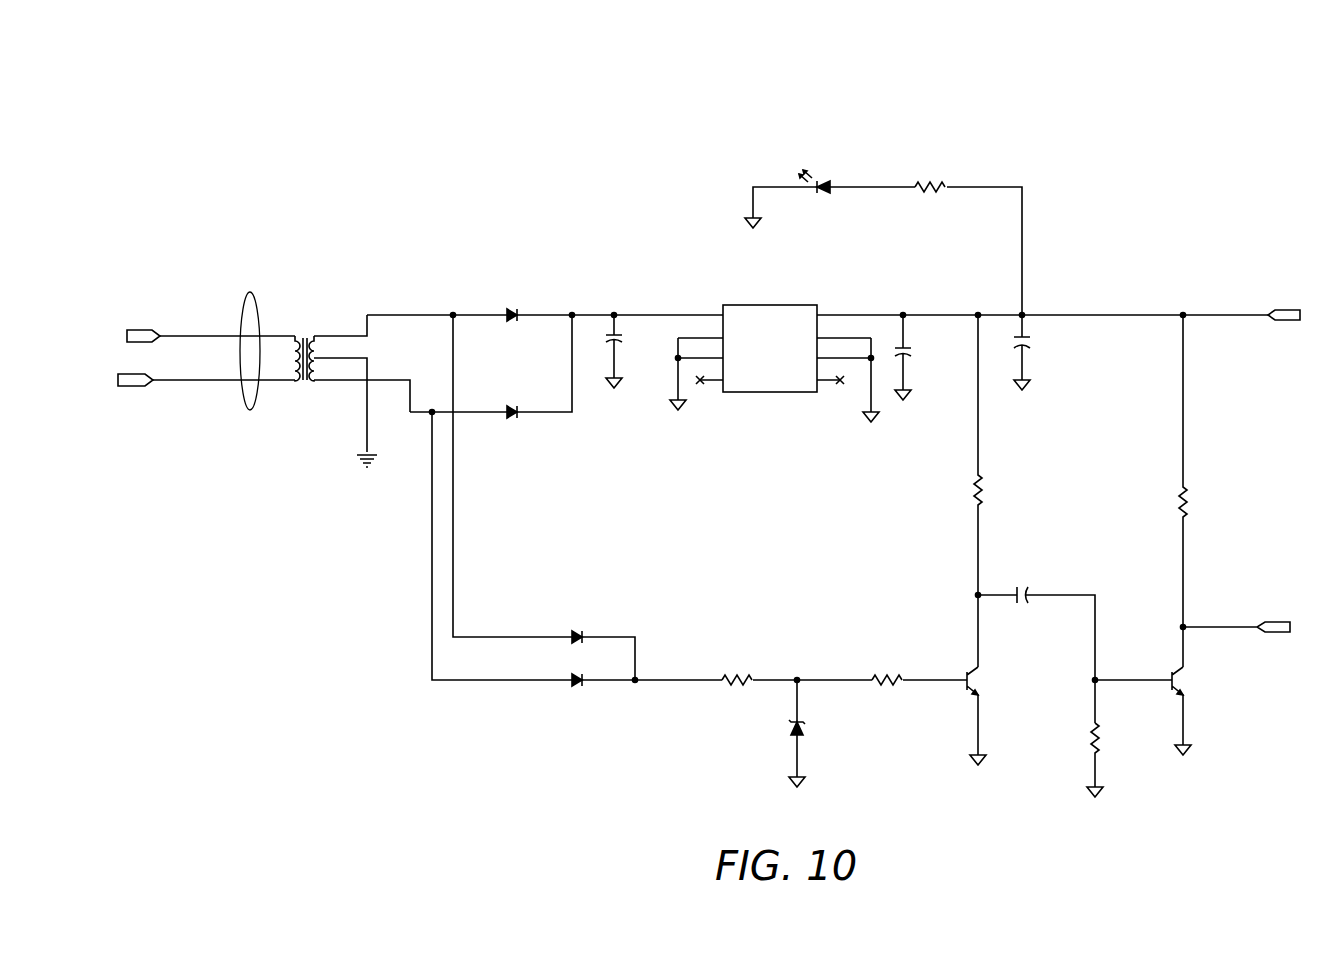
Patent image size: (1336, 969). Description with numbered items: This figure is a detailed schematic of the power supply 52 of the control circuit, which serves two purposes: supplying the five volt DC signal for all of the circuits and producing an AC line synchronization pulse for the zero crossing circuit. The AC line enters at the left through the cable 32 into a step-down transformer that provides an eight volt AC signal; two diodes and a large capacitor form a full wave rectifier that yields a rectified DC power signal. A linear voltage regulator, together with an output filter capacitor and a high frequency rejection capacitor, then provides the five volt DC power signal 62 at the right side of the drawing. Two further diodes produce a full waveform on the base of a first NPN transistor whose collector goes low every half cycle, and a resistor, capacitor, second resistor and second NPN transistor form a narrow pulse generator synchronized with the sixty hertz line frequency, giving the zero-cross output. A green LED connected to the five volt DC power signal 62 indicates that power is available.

The AC power input cable 32 is at (248, 292).
The power supply 52 is at (372, 135).
The 5 volt DC power signal 62 is at (1210, 315).